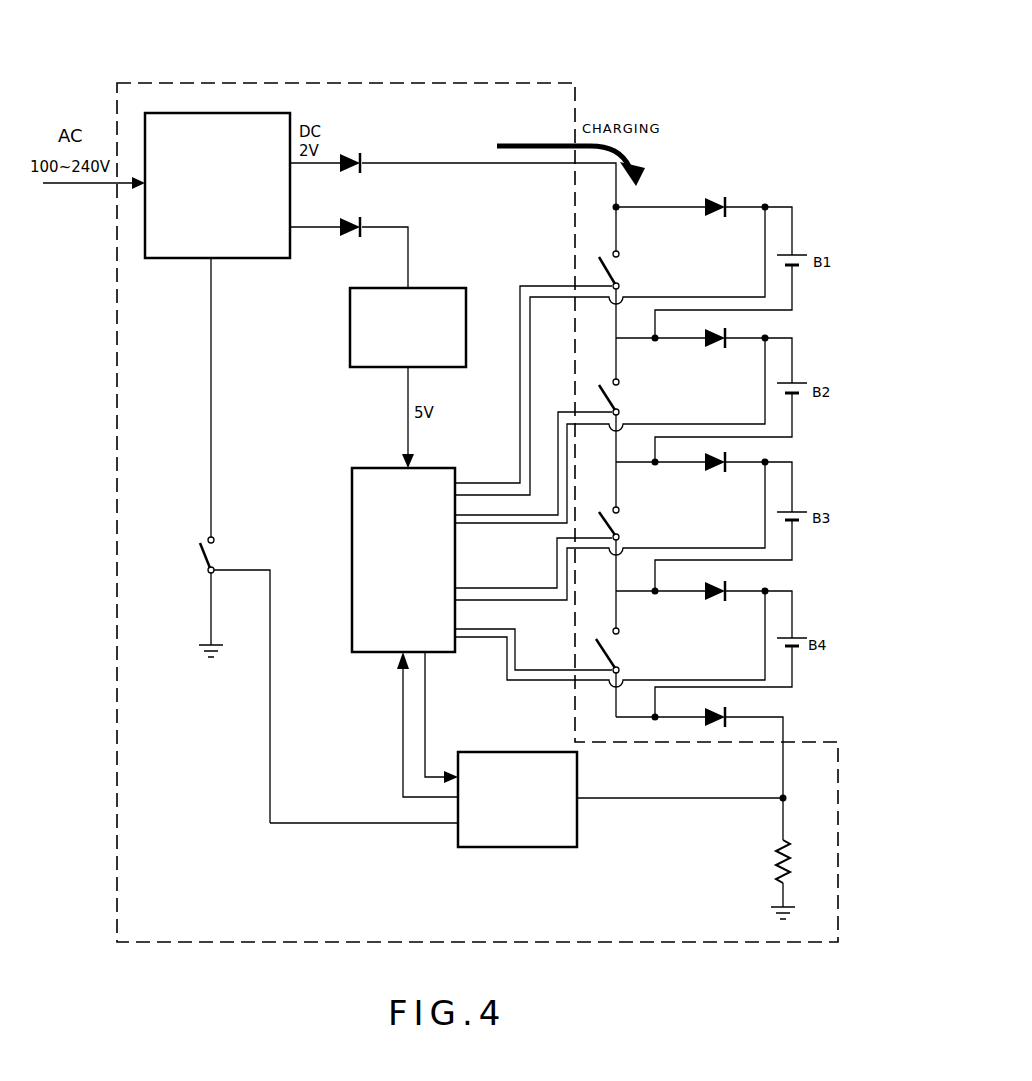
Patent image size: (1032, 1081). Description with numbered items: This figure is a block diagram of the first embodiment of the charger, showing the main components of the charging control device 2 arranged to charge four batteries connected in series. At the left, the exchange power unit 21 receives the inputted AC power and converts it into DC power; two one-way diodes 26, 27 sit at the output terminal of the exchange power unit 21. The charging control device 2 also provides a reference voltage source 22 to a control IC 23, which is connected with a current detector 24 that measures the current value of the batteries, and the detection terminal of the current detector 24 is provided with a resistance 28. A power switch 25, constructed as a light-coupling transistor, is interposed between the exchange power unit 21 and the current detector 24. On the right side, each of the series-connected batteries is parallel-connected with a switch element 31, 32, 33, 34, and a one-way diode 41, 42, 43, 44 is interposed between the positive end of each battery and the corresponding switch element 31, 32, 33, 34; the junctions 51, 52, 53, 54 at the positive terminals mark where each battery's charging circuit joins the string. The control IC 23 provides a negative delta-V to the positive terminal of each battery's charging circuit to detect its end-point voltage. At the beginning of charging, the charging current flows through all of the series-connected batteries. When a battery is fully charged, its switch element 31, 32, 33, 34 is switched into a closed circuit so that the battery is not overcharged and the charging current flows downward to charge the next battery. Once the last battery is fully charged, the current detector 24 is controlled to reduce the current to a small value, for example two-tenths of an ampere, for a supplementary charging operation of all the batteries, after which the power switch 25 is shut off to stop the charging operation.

The charging control device 2 is at (477, 107).
The exchange power unit 21 is at (230, 123).
The reference voltage source 22 is at (443, 288).
The control IC 23 is at (435, 475).
The current detector 24 is at (525, 758).
The power switch 25 is at (217, 557).
The one-way diode 26 is at (372, 153).
The one-way diode 27 is at (368, 222).
The resistance 28 is at (773, 857).
The switch element 31 is at (623, 265).
The switch element 32 is at (620, 395).
The switch element 33 is at (620, 525).
The switch element 34 is at (615, 652).
The one-way diode 41 is at (713, 223).
The one-way diode 42 is at (713, 348).
The one-way diode 43 is at (713, 475).
The one-way diode 44 is at (710, 607).
The battery connection terminal 51 is at (767, 200).
The battery connection terminal 52 is at (767, 330).
The battery connection terminal 53 is at (767, 457).
The battery connection terminal 54 is at (767, 585).